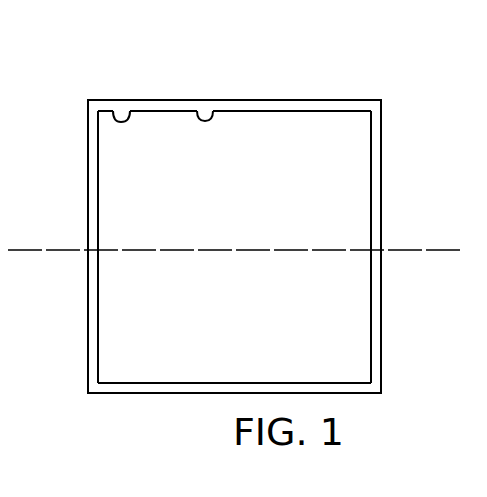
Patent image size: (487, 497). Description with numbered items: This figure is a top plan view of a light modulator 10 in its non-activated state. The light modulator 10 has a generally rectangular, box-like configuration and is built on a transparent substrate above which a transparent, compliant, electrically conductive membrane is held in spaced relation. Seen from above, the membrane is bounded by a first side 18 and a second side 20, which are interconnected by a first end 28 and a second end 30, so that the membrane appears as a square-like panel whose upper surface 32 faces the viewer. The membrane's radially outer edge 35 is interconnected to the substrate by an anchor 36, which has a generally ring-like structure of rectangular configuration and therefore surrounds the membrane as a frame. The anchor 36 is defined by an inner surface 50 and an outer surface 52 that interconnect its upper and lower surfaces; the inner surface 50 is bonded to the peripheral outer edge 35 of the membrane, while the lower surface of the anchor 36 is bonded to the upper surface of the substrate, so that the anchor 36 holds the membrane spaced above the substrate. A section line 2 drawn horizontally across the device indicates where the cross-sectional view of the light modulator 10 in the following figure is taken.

The light modulator 10 is at (395, 90).
The first side of membrane 18 is at (97, 177).
The second side of membrane 20 is at (381, 165).
The first end of membrane 28 is at (155, 383).
The second end of membrane 30 is at (210, 117).
The upper surface of membrane 32 is at (278, 195).
The radially outer edge of membrane 35 is at (371, 213).
The anchor 36 is at (306, 105).
The inner surface of anchor 50 is at (128, 118).
The outer surface of anchor 52 is at (86, 133).
The section line 2- 2 is at (23, 251).